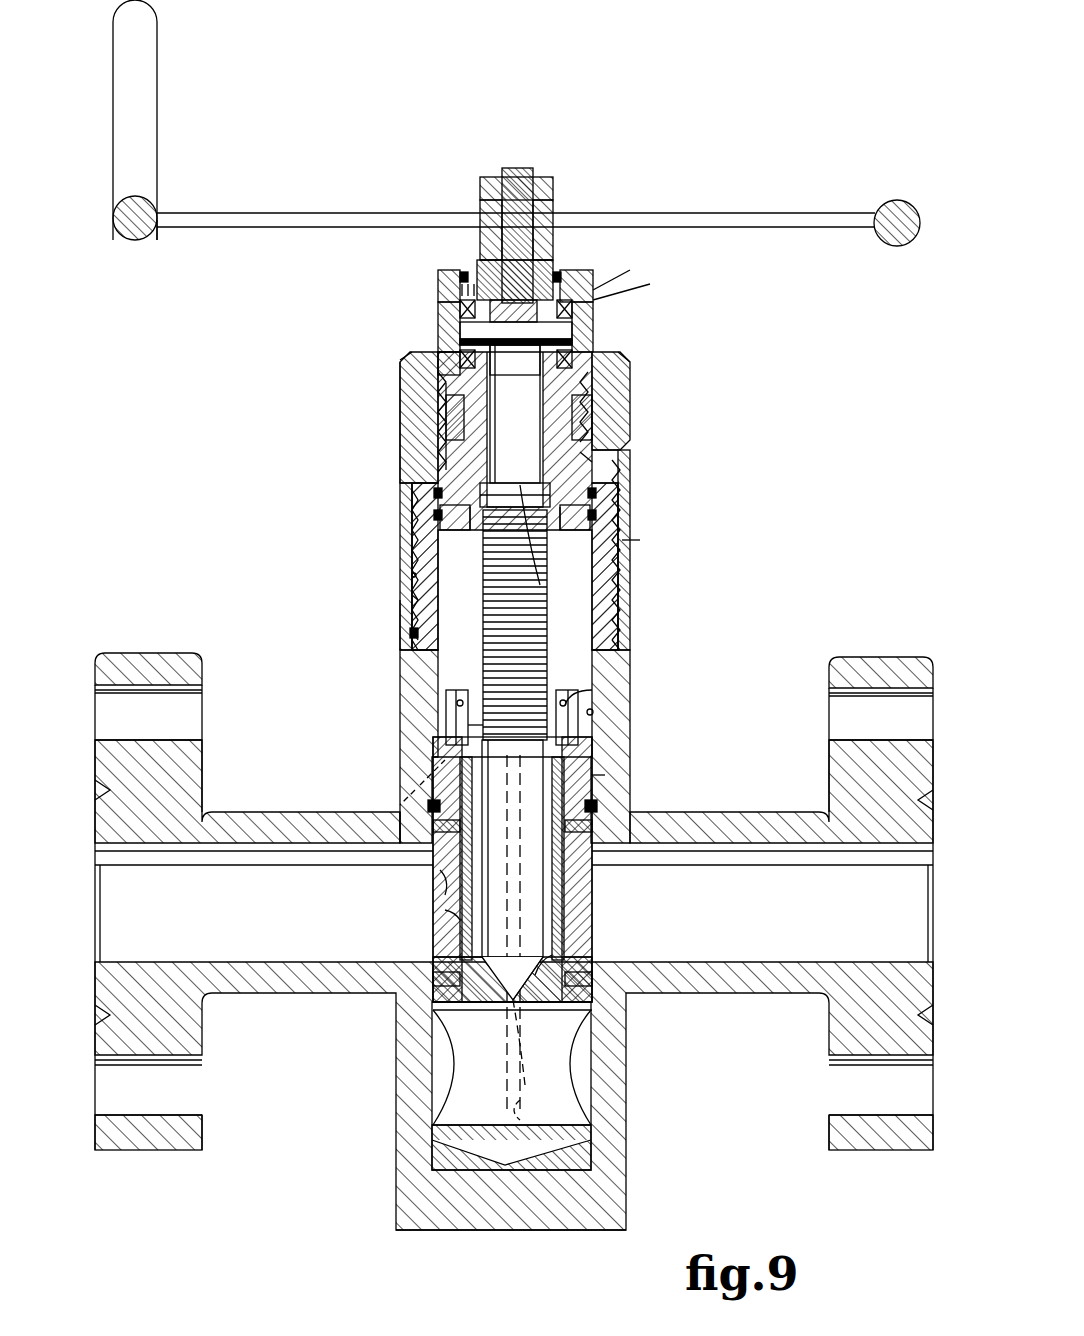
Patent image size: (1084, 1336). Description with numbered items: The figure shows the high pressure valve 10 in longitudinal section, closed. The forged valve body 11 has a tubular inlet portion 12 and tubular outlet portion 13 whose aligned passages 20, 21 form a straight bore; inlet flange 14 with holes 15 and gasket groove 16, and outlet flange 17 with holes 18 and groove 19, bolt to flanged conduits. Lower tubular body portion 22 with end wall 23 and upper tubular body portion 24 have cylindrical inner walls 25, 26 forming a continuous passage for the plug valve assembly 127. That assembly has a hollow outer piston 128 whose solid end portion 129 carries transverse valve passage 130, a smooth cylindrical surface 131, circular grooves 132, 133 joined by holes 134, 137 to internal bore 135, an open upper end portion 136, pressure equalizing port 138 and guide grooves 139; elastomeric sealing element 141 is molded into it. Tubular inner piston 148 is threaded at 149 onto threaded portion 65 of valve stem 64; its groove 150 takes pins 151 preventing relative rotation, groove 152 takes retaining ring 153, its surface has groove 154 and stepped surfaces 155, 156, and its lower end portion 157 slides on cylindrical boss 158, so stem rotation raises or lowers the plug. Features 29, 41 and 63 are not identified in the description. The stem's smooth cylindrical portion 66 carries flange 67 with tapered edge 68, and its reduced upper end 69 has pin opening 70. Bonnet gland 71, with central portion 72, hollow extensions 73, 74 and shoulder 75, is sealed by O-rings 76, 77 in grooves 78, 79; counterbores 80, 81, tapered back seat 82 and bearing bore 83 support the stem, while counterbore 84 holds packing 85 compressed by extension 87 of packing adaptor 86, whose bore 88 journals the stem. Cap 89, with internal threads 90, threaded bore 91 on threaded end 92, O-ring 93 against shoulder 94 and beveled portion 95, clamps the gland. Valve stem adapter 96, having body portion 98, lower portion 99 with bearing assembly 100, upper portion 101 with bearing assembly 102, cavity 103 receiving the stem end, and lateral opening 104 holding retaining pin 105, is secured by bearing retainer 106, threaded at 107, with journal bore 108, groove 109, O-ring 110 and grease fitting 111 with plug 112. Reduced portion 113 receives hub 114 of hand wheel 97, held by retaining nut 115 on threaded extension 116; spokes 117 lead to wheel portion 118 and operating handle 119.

The high pressure valve 10 is at (325, 585).
The valve body 11 is at (385, 805).
The tubular inlet portion 12 is at (258, 810).
The tubular outlet portion 13 is at (788, 810).
The end flange 14 is at (132, 660).
The holes or apertures 15 is at (188, 706).
The annular groove 16 is at (95, 790).
The flange 17 is at (875, 660).
The holes or apertures 18 is at (840, 708).
The annular groove 19 is at (933, 800).
The tubular passage 20 is at (170, 852).
The tubular passage 21 is at (780, 852).
The tubular body portion 22 is at (396, 1140).
The end wall 23 is at (495, 1235).
The tubular body portion 24 is at (440, 710).
The cylindrical inner wall 25 is at (580, 1080).
The cylindrical inner wall 26 is at (595, 714).
The plug 29 is at (593, 1145).
The seal ring 41 is at (605, 805).
The passage 63 is at (400, 865).
The valve stem 64 is at (480, 590).
The threaded portion 65 is at (550, 625).
The smooth cylindrical portion 66 is at (440, 452).
The flange 67 is at (468, 540).
The tapered edge portion 68 is at (540, 585).
The extreme upper end 69 is at (572, 305).
The opening 70 is at (572, 330).
The valve stem bonnet gland 71 is at (630, 462).
The central portion 72 is at (630, 445).
The hollow extension 73 is at (595, 420).
The hollow extension 74 is at (596, 510).
The shoulder 75 is at (400, 495).
The O-ring 76 is at (596, 490).
The O-ring 77 is at (596, 525).
The peripheral groove 78 is at (622, 470).
The peripheral groove 79 is at (647, 539).
The counterbore 80 is at (555, 515).
The counterbore 81 is at (412, 510).
The tapered portion 82 is at (480, 485).
The smaller bore 83 is at (545, 470).
The counterbore 84 is at (446, 412).
The valve stem packing 85 is at (448, 430).
The packing adaptor 86 is at (400, 382).
The tubular extension 87 is at (440, 400).
The bore 88 is at (545, 392).
The cap 89 is at (398, 360).
The internal threads 90 is at (440, 345).
The internally threaded enlarged bore 91 is at (412, 578).
The threaded end portion 92 is at (412, 598).
The O-ring 93 is at (410, 625).
The shoulder 94 is at (412, 648).
The internally beveled portion 95 is at (595, 455).
The valve stem adapter 96 is at (560, 270).
The hand wheel 97 is at (385, 200).
The central cylindrical body portion 98 is at (445, 312).
The lower cylindrical portion 99 is at (630, 380).
The bearing assembly 100 is at (630, 365).
The upper cylindrical portion 101 is at (478, 265).
The bearing assembly 102 is at (593, 318).
The internal bore 103 is at (500, 348).
The laterally extending opening 104 is at (445, 330).
The valve stem retaining pin 105 is at (593, 340).
The bearing retainer 106 is at (593, 278).
The external threads 107 is at (620, 400).
The internal bore 108 is at (637, 284).
The annular groove 109 is at (450, 275).
The O-ring 110 is at (626, 271).
The threaded grease fitting 111 is at (460, 278).
The plug 112 is at (460, 292).
The portion of reduced diameter 113 is at (485, 245).
The cylindrical hub 114 is at (482, 210).
The retaining nut 115 is at (555, 175).
The threaded extension 116 is at (485, 178).
The spokes 117 is at (772, 213).
The annular wheel portion 118 is at (893, 244).
The operating handle 119 is at (157, 62).
The plug valve assembly 127 is at (610, 886).
The hollow outer piston 128 is at (595, 760).
The solid cylindrical end portion 129 is at (626, 1010).
The valve passage 130 is at (430, 1102).
The smooth cylindrical surface 131 is at (605, 775).
The circular groove 132 is at (585, 945).
The circular groove 133 is at (405, 950).
The holes 134 is at (540, 1010).
The internal bore 135 is at (445, 915).
The upper end portion 136 is at (592, 700).
The holes 137 is at (472, 1010).
The pressure equalizing port 138 is at (465, 1110).
The longitudinally extending grooves 139 is at (525, 1112).
The sealing element 141 is at (564, 890).
The inner piston 148 is at (440, 760).
The internal threads 149 is at (485, 660).
The groove 150 is at (446, 695).
The pins 151 is at (440, 733).
The groove 152 is at (615, 665).
The retaining ring 153 is at (440, 698).
The groove 154 is at (455, 865).
The stepped surface 155 is at (440, 893).
The stepped surface 156 is at (433, 935).
The lower end portion 157 is at (433, 952).
The cylindrical boss 158 is at (555, 940).